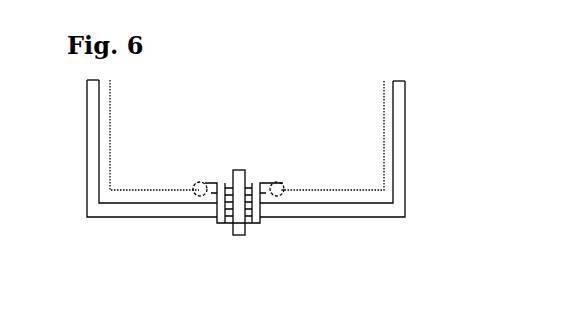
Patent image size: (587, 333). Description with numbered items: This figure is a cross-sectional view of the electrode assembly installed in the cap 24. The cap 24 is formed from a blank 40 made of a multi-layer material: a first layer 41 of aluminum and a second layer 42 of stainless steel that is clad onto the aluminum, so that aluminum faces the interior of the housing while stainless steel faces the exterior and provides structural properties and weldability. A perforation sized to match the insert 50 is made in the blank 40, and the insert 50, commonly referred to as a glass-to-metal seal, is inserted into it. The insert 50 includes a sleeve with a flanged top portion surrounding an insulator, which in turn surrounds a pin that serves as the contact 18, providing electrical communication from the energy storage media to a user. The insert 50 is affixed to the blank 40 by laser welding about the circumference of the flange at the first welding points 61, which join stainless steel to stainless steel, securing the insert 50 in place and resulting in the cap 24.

The contact 18 is at (238, 235).
The cap 24 is at (315, 233).
The blank 40 is at (102, 232).
The first layer 41 is at (95, 132).
The second layer 42 is at (388, 131).
The insert 50 is at (218, 234).
The first welding points 61 is at (278, 183).